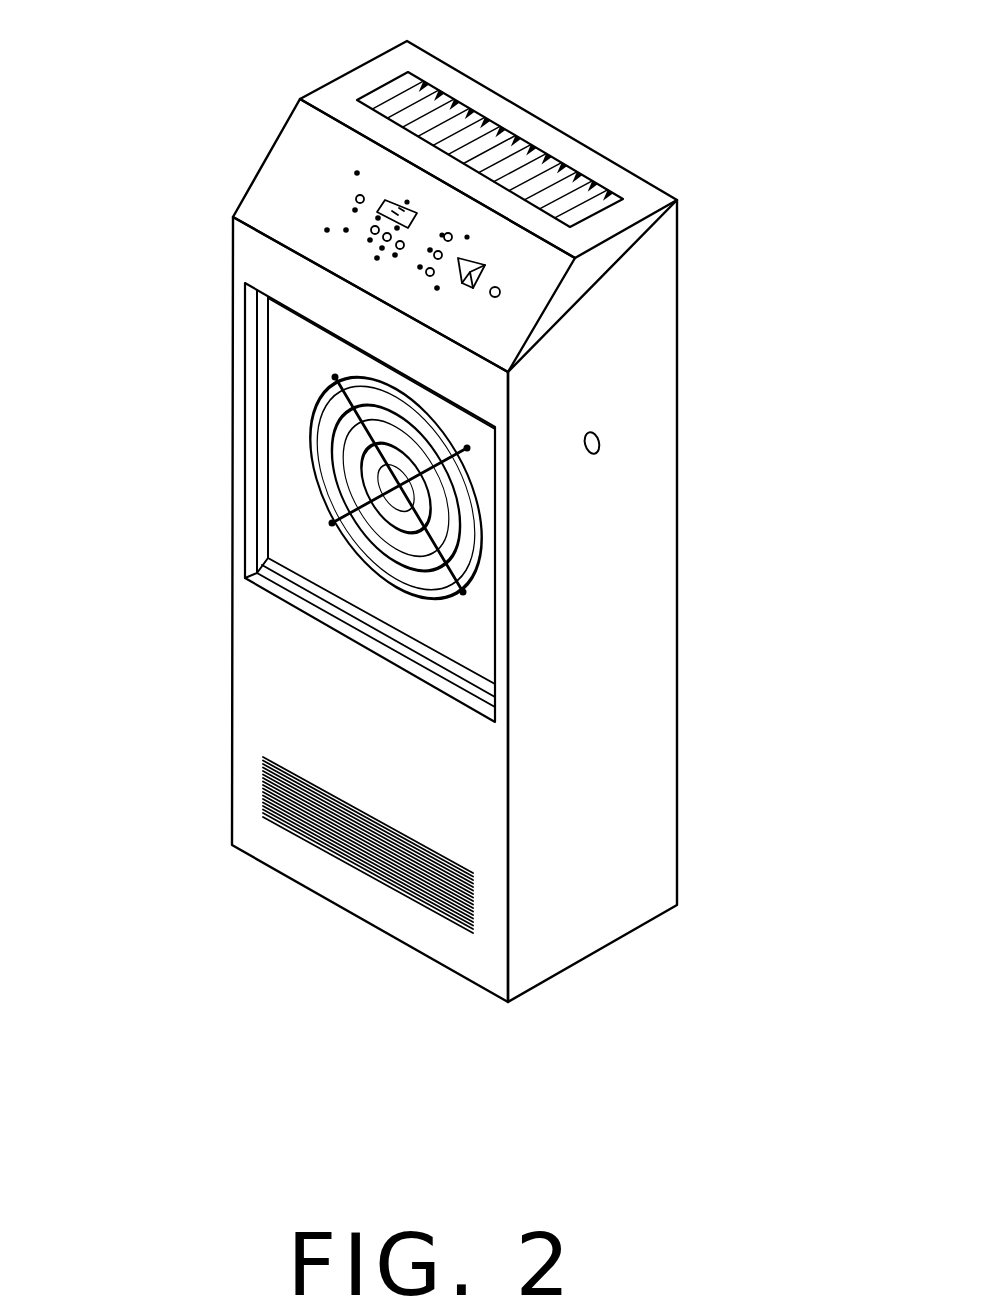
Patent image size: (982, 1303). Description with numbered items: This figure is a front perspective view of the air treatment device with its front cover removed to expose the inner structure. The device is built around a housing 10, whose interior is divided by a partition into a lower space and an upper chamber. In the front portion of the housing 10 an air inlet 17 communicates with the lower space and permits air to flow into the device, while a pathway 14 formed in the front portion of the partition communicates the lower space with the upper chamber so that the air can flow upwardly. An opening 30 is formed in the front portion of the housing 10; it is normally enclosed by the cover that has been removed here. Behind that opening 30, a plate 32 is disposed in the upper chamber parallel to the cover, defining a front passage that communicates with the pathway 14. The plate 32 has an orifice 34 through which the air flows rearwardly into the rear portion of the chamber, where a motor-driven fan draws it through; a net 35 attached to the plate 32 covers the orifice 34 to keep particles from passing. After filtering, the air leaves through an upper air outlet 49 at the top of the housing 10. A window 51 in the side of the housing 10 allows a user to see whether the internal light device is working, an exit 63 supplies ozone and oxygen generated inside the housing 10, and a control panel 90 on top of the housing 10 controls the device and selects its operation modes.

The housing 10 is at (633, 762).
The pathway 14 is at (253, 573).
The air inlet 17 is at (338, 840).
The opening 30 is at (310, 613).
The plate 32 is at (295, 505).
The orifice 34 is at (320, 393).
The net 35 is at (313, 417).
The upper air outlet 49 is at (500, 133).
The window 51 is at (600, 440).
The exit 63 is at (501, 291).
The control panel 90 is at (318, 192).